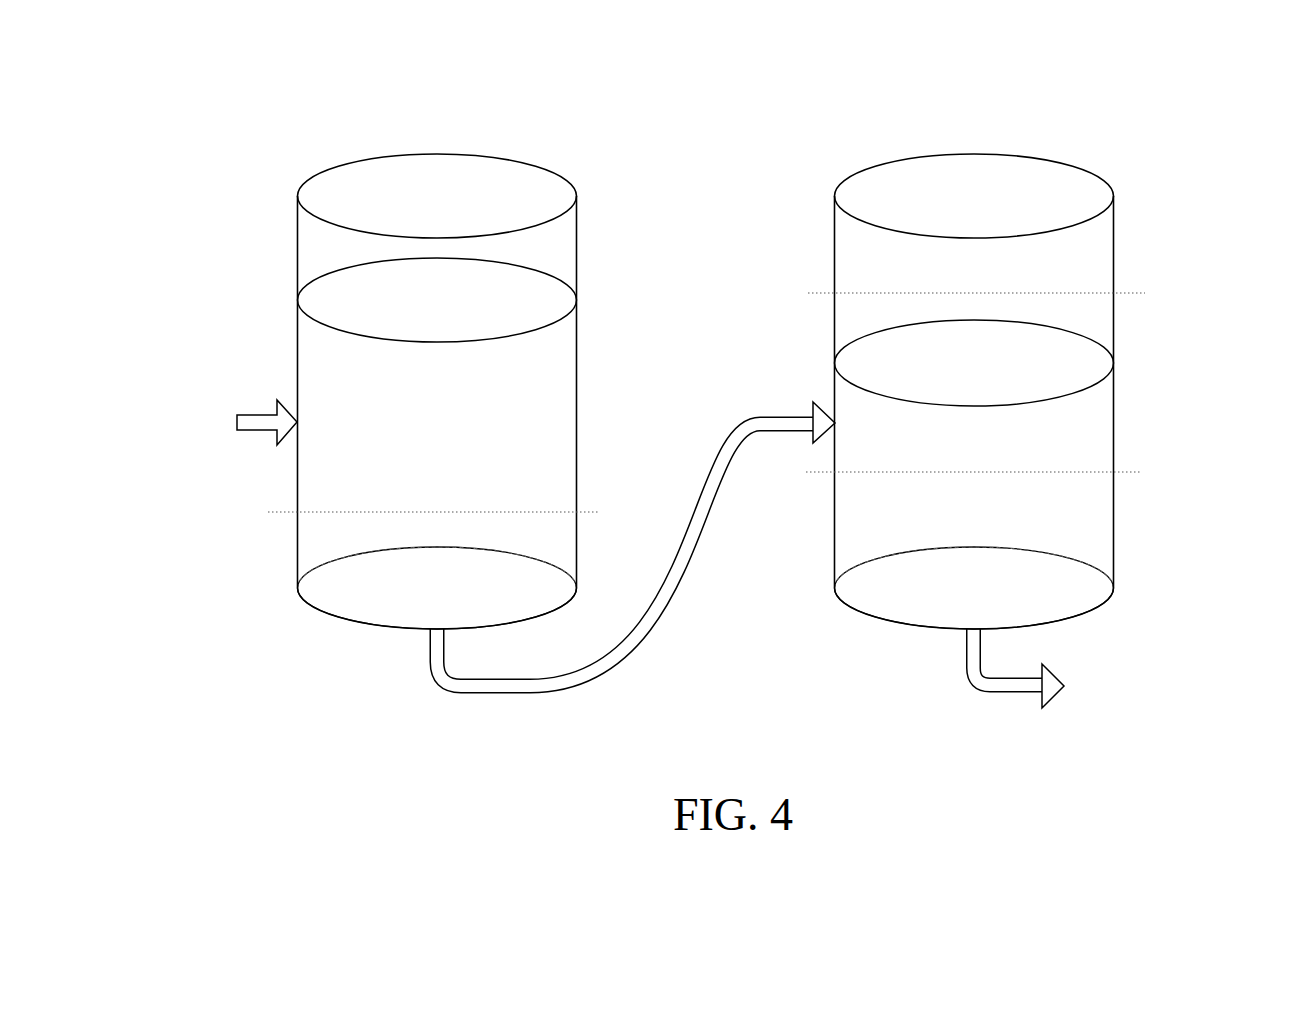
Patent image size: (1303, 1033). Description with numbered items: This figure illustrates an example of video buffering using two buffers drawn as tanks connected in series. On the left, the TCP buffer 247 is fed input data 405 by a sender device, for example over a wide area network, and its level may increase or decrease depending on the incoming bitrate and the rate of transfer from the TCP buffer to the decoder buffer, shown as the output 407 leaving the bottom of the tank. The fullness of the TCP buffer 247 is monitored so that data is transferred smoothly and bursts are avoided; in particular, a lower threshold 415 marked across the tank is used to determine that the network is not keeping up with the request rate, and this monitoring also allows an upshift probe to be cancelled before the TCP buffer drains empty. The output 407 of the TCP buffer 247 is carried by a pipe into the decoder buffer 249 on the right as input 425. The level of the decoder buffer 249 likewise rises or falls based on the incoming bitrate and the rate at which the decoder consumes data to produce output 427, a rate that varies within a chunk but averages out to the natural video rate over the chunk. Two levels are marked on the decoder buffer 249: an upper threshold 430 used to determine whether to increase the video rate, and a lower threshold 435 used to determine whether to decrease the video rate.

The TCP buffer 247 is at (437, 340).
The decoder buffer 249 is at (974, 339).
The input data 405 is at (233, 422).
The output 407 is at (569, 566).
The lower threshold 415 is at (365, 513).
The input 425 is at (792, 396).
The output 427 is at (1064, 660).
The upper threshold 430 is at (1043, 293).
The lower threshold 435 is at (1042, 470).